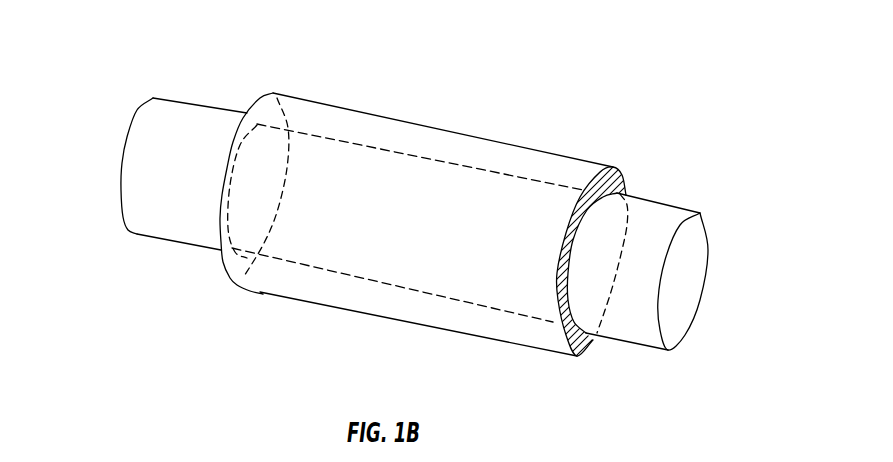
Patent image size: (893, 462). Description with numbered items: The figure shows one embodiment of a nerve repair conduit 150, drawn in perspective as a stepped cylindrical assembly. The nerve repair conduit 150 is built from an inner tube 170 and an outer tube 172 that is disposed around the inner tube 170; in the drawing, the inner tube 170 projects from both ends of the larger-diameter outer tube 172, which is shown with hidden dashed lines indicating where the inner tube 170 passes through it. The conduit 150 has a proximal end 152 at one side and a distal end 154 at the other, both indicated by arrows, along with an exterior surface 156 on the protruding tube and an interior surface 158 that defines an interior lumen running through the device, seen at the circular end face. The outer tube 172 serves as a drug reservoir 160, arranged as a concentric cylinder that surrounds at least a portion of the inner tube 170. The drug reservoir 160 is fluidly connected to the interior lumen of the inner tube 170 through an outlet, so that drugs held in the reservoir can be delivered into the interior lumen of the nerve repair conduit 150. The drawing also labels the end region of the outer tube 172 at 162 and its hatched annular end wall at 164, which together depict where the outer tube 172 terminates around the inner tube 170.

The nerve repair conduit 150 is at (455, 100).
The proximal end 152 is at (112, 171).
The distal end 154 is at (723, 295).
The exterior surface 156 is at (652, 227).
The interior surface 158 is at (695, 265).
The drug reservoir 160 is at (512, 210).
The proximal end of sleeve 162 is at (268, 110).
The distal annular end face 164 is at (578, 357).
The inner tube 170 is at (188, 122).
The outer tube 172 is at (393, 123).